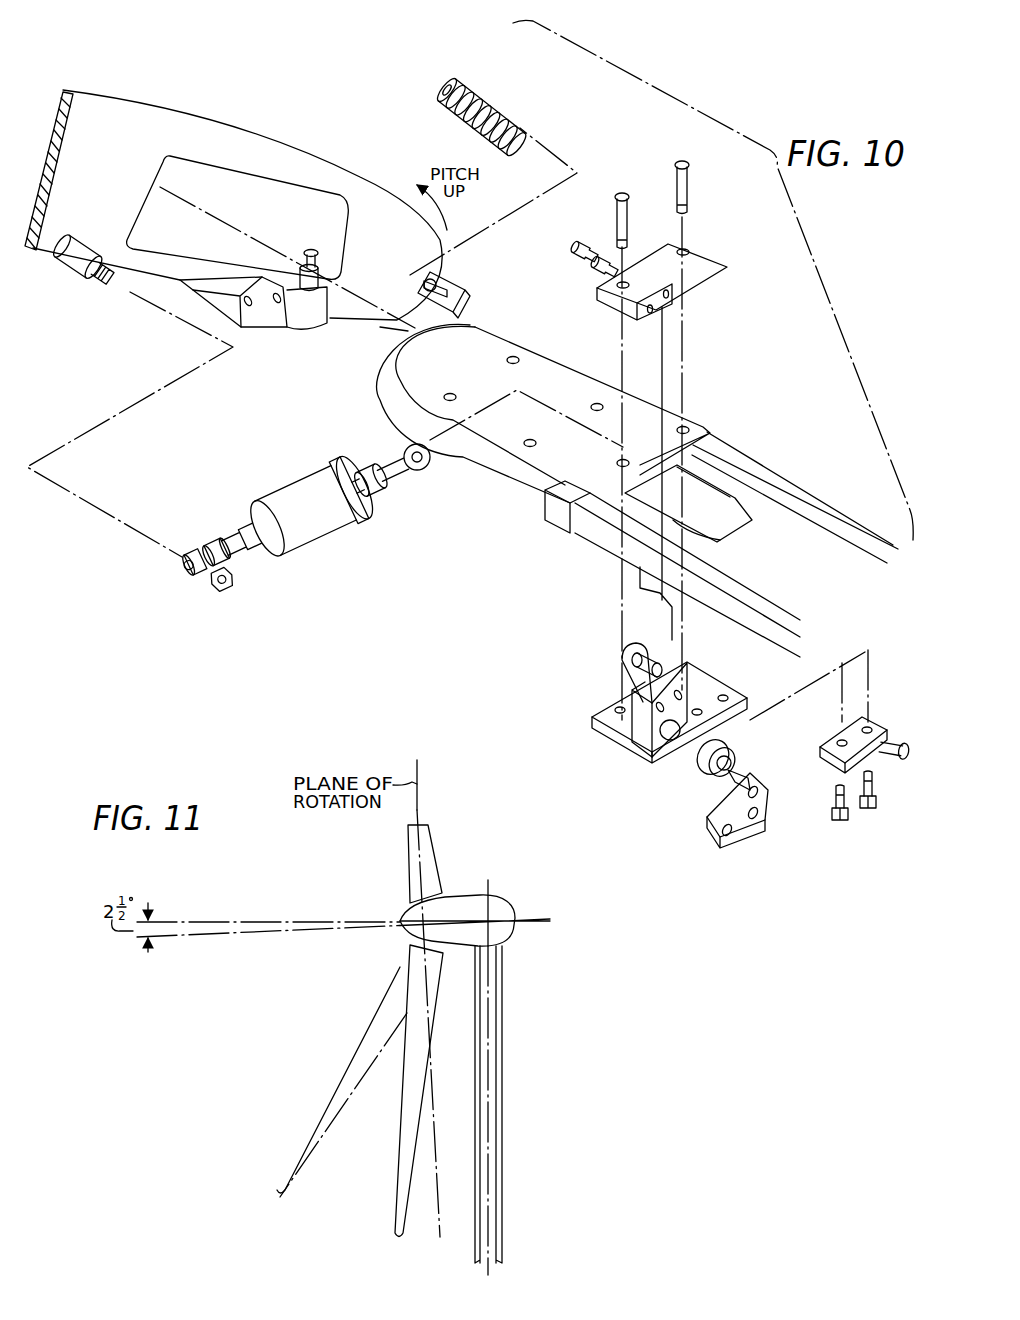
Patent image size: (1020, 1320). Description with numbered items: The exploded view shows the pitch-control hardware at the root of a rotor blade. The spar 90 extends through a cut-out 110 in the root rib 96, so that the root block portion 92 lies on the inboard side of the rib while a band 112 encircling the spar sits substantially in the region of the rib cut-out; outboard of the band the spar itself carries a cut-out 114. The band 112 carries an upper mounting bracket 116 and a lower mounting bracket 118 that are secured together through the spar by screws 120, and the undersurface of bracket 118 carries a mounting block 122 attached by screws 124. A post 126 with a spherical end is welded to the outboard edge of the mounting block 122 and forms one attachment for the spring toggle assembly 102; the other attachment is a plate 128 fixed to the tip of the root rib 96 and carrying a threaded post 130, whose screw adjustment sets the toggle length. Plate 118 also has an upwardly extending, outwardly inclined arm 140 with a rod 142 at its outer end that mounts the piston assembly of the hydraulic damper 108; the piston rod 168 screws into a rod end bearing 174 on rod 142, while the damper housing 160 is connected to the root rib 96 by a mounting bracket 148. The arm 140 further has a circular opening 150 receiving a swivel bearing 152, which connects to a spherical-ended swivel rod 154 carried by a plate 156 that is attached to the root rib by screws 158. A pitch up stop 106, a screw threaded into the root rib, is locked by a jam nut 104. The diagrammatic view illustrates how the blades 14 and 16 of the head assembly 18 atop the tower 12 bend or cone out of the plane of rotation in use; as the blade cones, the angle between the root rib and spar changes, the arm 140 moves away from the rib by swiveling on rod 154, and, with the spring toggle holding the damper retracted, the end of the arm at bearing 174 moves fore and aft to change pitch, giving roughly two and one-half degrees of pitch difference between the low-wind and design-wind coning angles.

In FIG. 10, the root rib 96 is at (140, 110).
In FIG. 10, the cut-out 110 is at (238, 183).
In FIG. 10, the jam nut 104 is at (300, 273).
In FIG. 10, the pitch up stop 106 is at (312, 252).
In FIG. 10, the mounting bracket 148 is at (82, 264).
In FIG. 10, the spring toggle assembly 102 is at (498, 84).
In FIG. 10, the plate 128 is at (447, 278).
In FIG. 10, the threaded post 130 is at (423, 281).
In FIG. 10, the upper mounting bracket 116 is at (702, 265).
In FIG. 10, the screws 120 is at (618, 218).
In FIG. 10, the screws 158 is at (572, 258).
In FIG. 10, the root block portion 92 is at (550, 367).
In FIG. 10, the band 112 is at (557, 513).
In FIG. 10, the spar 90 is at (807, 547).
In FIG. 10, the cut-out 114 is at (715, 525).
In FIG. 10, the hydraulic damper 108 is at (325, 553).
In FIG. 10, the housing 160 is at (280, 548).
In FIG. 10, the piston rod 168 is at (358, 466).
In FIG. 10, the rod end bearing 174 is at (409, 470).
In FIG. 10, the lower mounting bracket 118 is at (603, 708).
In FIG. 10, the arm 140 is at (640, 687).
In FIG. 10, the rod 142 is at (665, 658).
In FIG. 10, the circular opening 150 is at (666, 745).
In FIG. 10, the swivel bearing 152 is at (730, 742).
In FIG. 10, the swivel rod 154 is at (713, 792).
In FIG. 10, the plate 156 is at (740, 820).
In FIG. 10, the mounting block 122 is at (853, 733).
In FIG. 10, the post 126 is at (892, 737).
In FIG. 10, the screws 124 is at (867, 809).
In FIG. 11, the blade 14 is at (413, 880).
In FIG. 11, the blade 16 is at (317, 1127).
In FIG. 11, the head assembly 18 is at (517, 905).
In FIG. 11, the tower 12 is at (503, 1125).